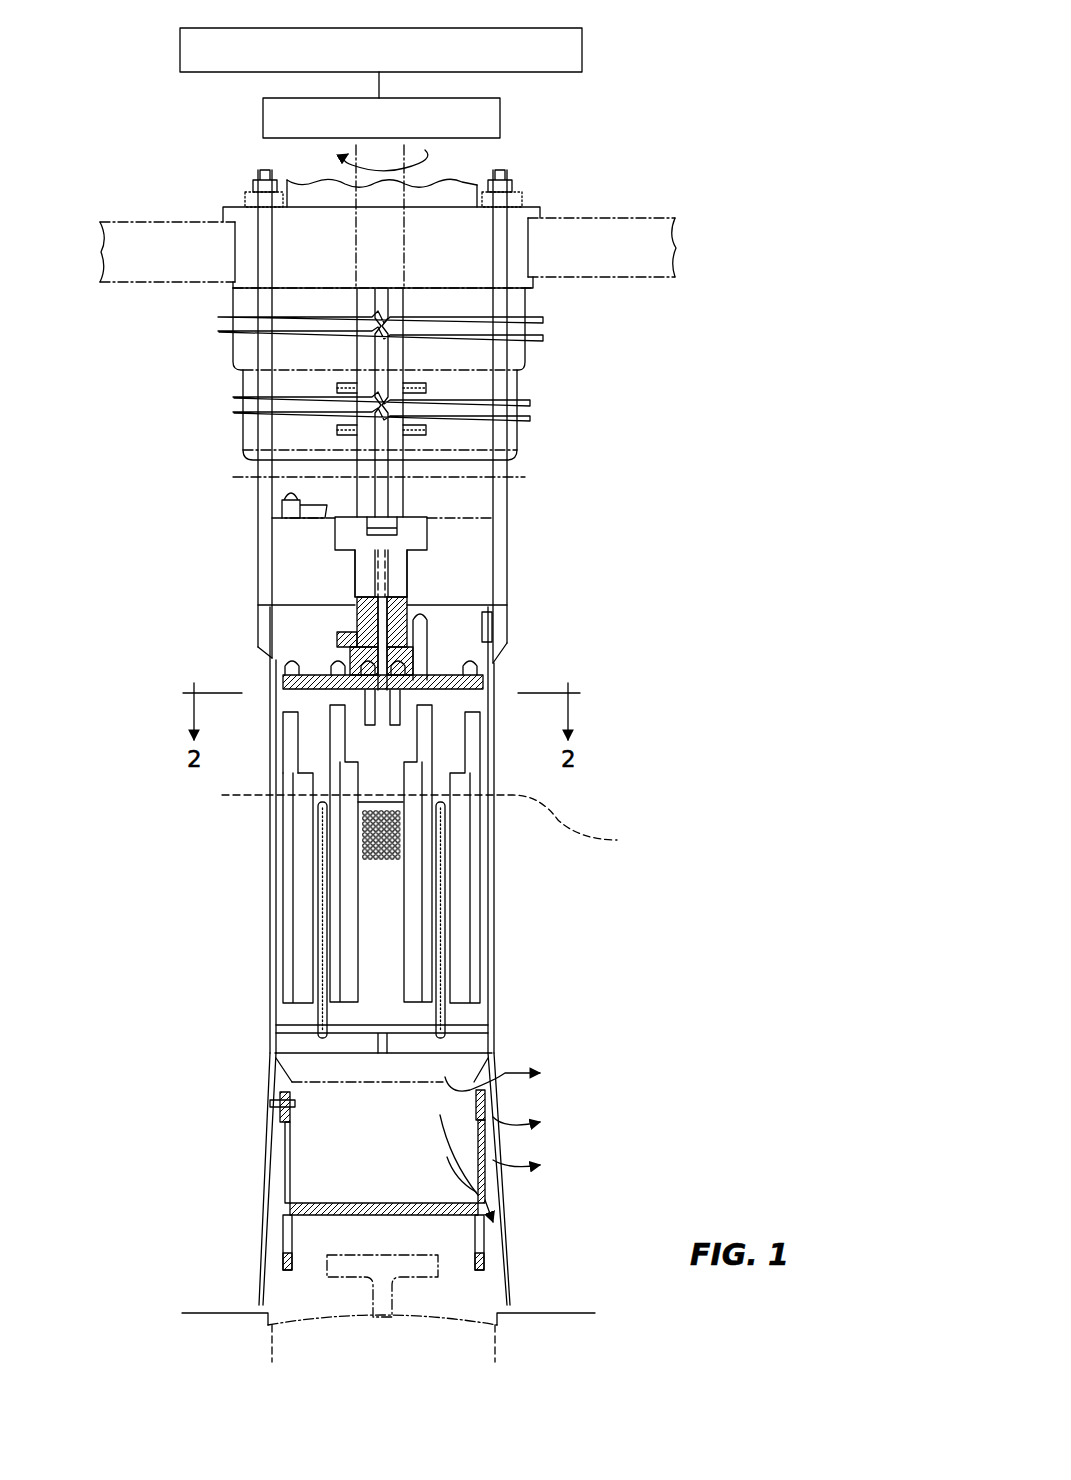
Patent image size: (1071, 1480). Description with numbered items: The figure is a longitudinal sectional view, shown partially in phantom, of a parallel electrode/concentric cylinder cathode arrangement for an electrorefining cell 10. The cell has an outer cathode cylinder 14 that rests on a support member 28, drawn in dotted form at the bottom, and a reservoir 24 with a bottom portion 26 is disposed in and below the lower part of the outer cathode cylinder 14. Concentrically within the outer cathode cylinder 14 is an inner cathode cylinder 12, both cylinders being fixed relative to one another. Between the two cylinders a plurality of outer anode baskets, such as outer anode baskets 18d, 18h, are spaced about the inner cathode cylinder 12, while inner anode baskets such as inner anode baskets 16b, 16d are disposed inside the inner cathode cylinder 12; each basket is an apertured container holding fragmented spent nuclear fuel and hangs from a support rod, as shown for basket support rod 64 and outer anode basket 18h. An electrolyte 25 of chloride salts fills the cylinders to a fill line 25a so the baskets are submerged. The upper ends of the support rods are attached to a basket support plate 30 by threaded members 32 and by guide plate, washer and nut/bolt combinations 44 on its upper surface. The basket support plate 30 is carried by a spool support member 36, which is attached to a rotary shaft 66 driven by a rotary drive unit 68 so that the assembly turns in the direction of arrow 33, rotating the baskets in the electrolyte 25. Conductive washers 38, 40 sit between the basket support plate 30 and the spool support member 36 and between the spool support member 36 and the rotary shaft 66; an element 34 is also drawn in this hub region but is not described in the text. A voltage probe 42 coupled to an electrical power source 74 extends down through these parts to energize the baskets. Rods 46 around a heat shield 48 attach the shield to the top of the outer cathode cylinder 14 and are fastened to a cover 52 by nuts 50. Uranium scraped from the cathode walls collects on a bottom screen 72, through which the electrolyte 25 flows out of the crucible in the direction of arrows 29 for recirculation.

The electrorefining cell 10 is at (150, 730).
The inner cathode cylinder 12 is at (322, 988).
The outer cathode cylinder 14 is at (270, 940).
The inner anode basket 16b is at (417, 920).
The inner anode basket 16d is at (343, 865).
The outer anode basket 18d is at (465, 875).
The outer anode basket 18h is at (302, 817).
The reservoir 24 is at (287, 1147).
The electrolyte 25 is at (480, 1010).
The fill line 25a is at (442, 824).
The bottom portion 26 is at (323, 1203).
The support member 28 is at (193, 1313).
The arrows 29 is at (480, 1157).
The basket support plate 30 is at (480, 680).
The threaded member 32 is at (430, 662).
The arrow 33 is at (353, 168).
The hub 34 is at (412, 640).
The spool support member 36 is at (355, 566).
The conductive washer 38 is at (347, 650).
The conductive washer 40 is at (353, 533).
The voltage probe 42 is at (357, 482).
The guide plate, washer and nut/bolt combinations 44 is at (287, 672).
The rods 46 is at (507, 508).
The heat shield 48 is at (533, 303).
The nut 50 is at (253, 182).
The cover 52 is at (655, 218).
The basket support rod 64 is at (287, 748).
The rotary shaft 66 is at (357, 343).
The rotary drive unit 68 is at (500, 118).
The bottom screen 72 is at (470, 1027).
The electrical power source 74 is at (583, 47).